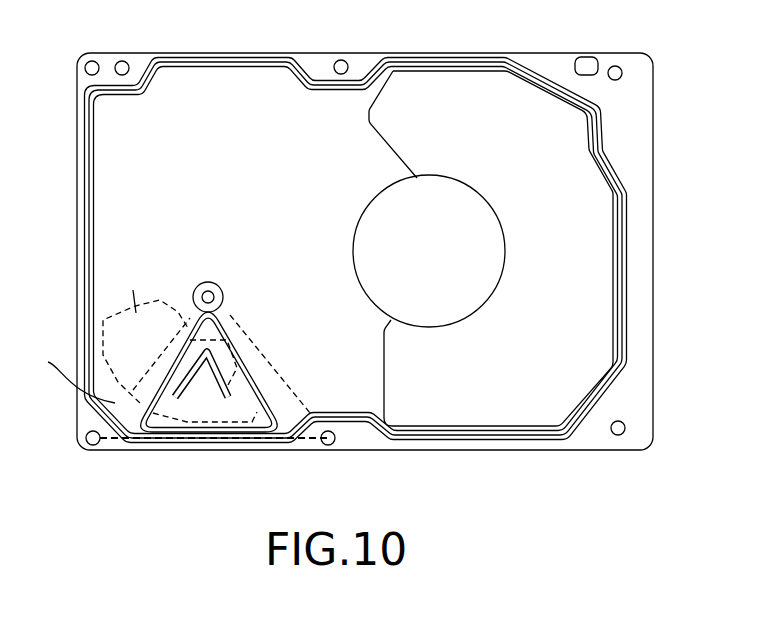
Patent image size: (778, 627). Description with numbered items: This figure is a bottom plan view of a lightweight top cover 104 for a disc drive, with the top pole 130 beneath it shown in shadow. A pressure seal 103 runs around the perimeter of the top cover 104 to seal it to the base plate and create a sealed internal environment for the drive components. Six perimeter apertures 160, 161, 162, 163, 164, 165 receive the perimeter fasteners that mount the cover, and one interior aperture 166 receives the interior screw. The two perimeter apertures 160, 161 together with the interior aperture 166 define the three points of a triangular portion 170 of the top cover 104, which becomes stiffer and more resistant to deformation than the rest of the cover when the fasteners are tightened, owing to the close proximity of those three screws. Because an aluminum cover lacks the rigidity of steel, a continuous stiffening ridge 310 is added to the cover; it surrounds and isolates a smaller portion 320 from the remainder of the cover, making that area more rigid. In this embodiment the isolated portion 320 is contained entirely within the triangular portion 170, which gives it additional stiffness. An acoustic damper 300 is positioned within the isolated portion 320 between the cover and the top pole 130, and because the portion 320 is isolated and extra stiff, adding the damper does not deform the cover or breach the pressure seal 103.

The pressure seal 103 is at (623, 267).
The top cover 104 is at (642, 330).
The top pole 130 is at (138, 282).
The perimeter aperture 160 is at (97, 445).
The perimeter aperture 161 is at (332, 445).
The perimeter aperture 162 is at (625, 428).
The perimeter aperture 163 is at (621, 71).
The perimeter aperture 164 is at (348, 64).
The perimeter aperture 165 is at (99, 65).
The interior aperture 166 is at (218, 290).
The triangular portion 170 is at (69, 368).
The acoustic damper 300 is at (182, 373).
The stiffening ridge 310 is at (250, 358).
The isolated portion 320 is at (187, 423).